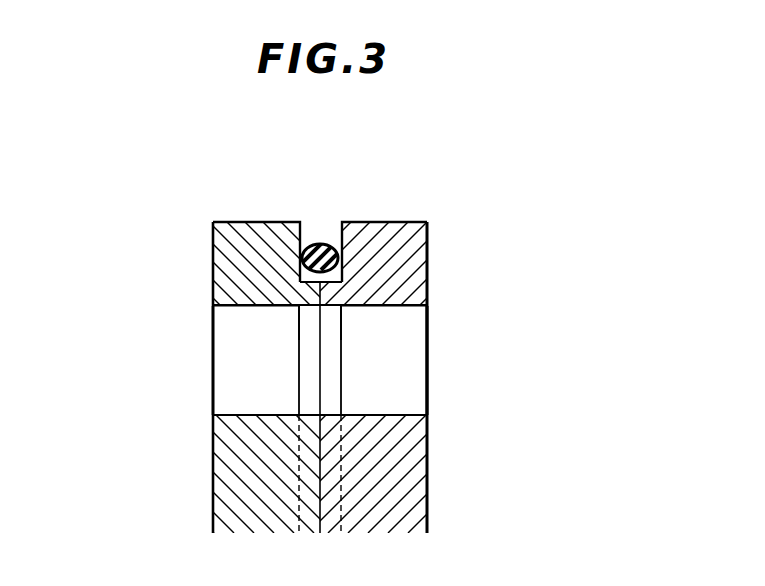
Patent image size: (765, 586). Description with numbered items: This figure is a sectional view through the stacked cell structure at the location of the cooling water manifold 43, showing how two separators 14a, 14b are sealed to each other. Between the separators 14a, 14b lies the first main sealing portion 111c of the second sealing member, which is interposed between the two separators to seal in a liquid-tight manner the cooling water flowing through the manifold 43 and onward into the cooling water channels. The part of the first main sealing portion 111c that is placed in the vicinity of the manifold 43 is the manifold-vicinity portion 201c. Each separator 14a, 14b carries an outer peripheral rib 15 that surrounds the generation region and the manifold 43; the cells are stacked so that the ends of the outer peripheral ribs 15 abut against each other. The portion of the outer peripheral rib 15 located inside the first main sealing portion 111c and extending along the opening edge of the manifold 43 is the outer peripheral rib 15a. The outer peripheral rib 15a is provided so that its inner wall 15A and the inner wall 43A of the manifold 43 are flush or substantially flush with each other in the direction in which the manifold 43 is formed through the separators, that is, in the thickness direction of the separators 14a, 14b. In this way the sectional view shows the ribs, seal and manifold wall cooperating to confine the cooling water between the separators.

The separator 14a is at (427, 245).
The separator 14b is at (212, 238).
The outer peripheral rib 15 is at (298, 413).
The outer peripheral rib 15a is at (305, 296).
The inner wall 15A is at (298, 336).
The manifold 43 is at (222, 318).
The inner wall 43A is at (250, 311).
The first main sealing portion 111c is at (361, 223).
The manifold-vicinity portion 201c is at (318, 243).